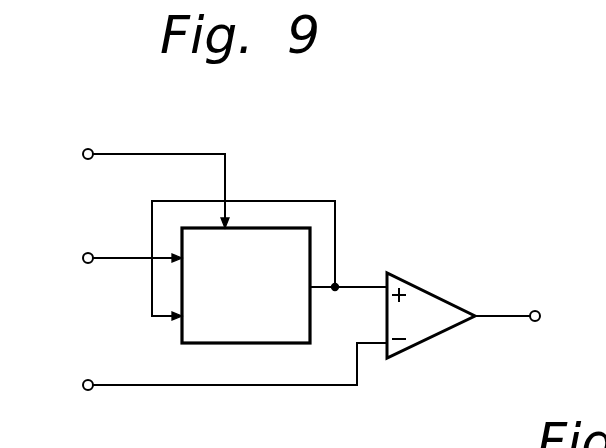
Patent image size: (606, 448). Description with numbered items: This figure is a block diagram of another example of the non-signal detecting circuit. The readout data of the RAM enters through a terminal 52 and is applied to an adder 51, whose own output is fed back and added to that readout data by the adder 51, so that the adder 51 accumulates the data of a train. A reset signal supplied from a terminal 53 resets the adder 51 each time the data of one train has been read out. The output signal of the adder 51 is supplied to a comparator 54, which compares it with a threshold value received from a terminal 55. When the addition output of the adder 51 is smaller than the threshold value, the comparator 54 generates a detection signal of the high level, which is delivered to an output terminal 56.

The adder 51 is at (229, 344).
The terminal 52 is at (88, 264).
The terminal 53 is at (88, 160).
The comparator 54 is at (442, 333).
The terminal 55 is at (88, 391).
The output terminal 56 is at (538, 322).